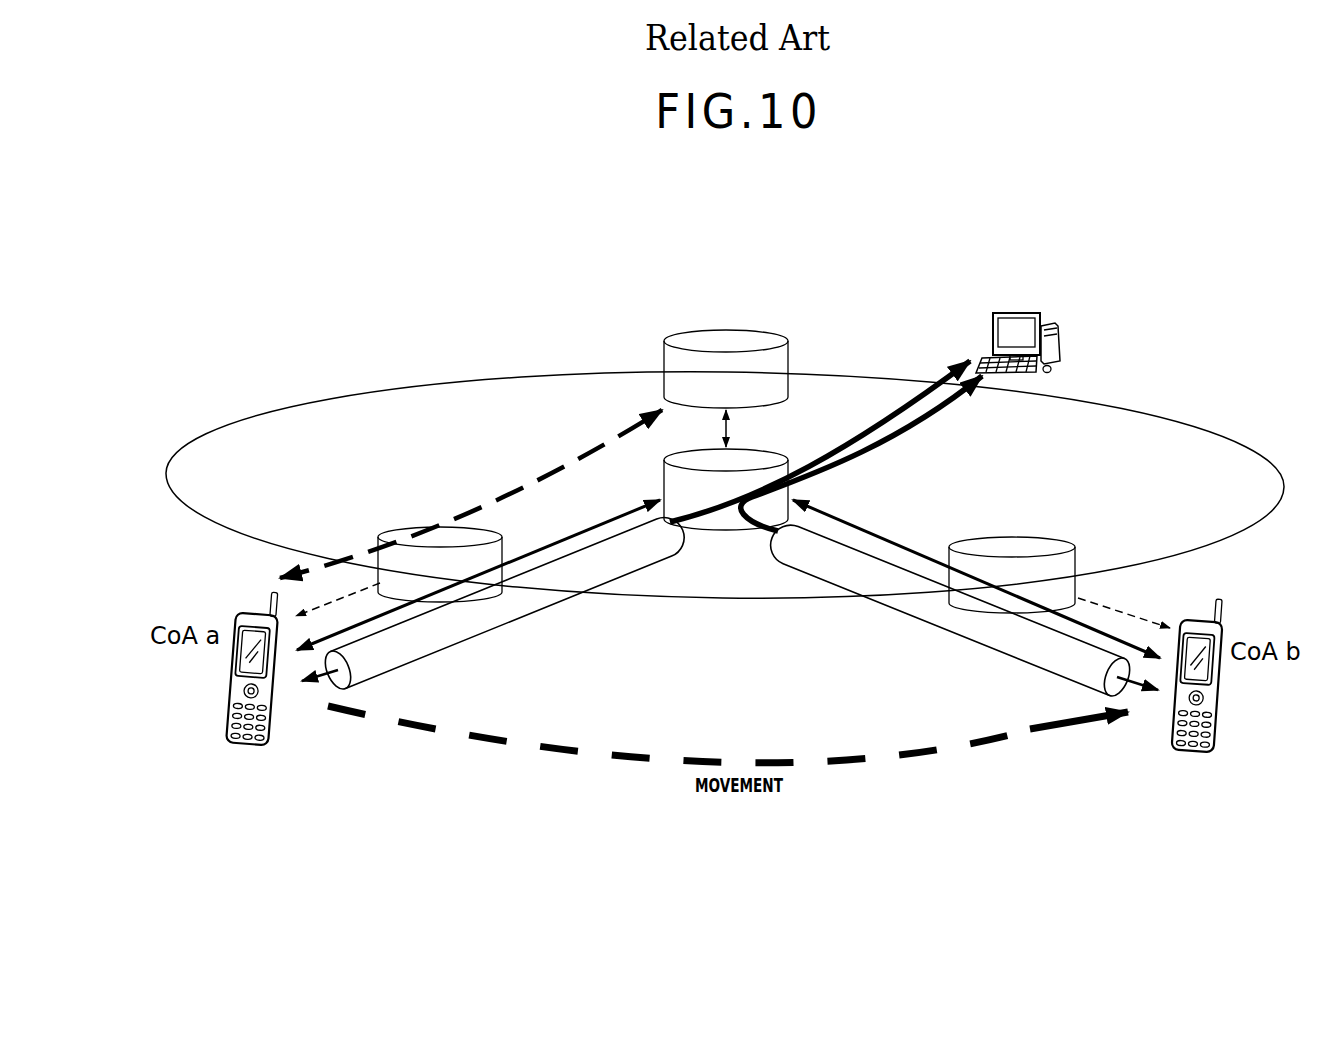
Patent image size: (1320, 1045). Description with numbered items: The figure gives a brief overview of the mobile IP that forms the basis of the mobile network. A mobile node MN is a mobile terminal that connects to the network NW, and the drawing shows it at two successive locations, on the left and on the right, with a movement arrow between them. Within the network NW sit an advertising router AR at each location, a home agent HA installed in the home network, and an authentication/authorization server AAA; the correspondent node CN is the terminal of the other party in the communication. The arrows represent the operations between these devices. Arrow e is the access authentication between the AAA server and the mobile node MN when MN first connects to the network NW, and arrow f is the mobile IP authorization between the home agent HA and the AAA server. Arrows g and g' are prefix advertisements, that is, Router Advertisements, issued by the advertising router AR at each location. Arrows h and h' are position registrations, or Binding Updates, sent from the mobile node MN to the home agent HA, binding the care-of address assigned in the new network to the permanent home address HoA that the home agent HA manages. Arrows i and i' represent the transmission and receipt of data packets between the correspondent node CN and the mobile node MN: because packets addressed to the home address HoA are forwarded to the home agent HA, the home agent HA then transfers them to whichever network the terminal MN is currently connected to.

The access authentication e is at (560, 468).
The mobile IP authorization f is at (737, 427).
The prefix advertisement g is at (338, 597).
The prefix advertisement g' is at (1124, 599).
The position registration h is at (478, 575).
The position registration h' is at (976, 579).
The data packet transmission/receipt i is at (820, 400).
The data packet transmission/receipt i' is at (861, 410).
The network NW is at (708, 598).
The authentication/authorization server AAA is at (726, 369).
The home agent HA is at (726, 489).
The home address HoA is at (725, 549).
The advertising router AR is at (726, 570).
The correspondent node CN is at (1035, 341).
The mobile node MN is at (722, 671).